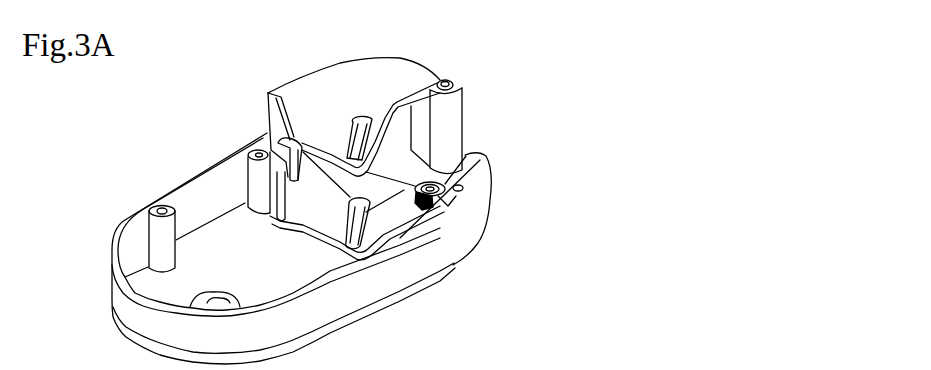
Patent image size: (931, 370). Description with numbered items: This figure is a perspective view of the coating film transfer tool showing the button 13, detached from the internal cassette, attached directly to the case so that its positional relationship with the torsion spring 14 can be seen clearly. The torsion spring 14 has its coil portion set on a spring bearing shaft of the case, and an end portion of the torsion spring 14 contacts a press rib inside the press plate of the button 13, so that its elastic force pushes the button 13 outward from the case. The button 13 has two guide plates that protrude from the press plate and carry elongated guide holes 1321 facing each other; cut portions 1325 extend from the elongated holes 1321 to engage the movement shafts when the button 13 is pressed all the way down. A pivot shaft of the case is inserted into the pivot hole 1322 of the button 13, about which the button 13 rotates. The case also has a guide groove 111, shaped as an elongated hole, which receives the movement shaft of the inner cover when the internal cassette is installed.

The guide groove 111 is at (222, 295).
The button 13 is at (377, 66).
The elongated guide hole 1321 is at (353, 153).
The pivot hole 1322 is at (453, 85).
The cut portion 1325 is at (352, 158).
The torsion spring 14 is at (417, 185).